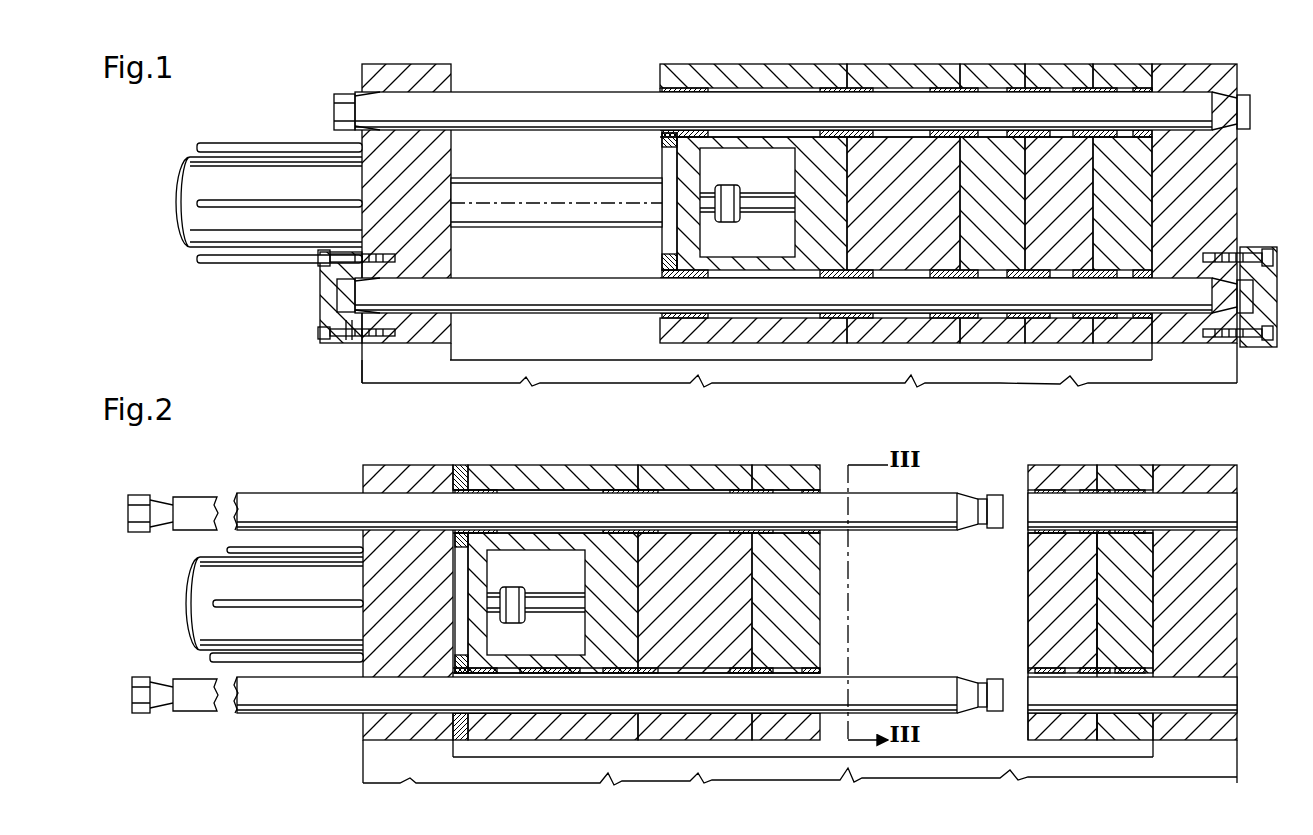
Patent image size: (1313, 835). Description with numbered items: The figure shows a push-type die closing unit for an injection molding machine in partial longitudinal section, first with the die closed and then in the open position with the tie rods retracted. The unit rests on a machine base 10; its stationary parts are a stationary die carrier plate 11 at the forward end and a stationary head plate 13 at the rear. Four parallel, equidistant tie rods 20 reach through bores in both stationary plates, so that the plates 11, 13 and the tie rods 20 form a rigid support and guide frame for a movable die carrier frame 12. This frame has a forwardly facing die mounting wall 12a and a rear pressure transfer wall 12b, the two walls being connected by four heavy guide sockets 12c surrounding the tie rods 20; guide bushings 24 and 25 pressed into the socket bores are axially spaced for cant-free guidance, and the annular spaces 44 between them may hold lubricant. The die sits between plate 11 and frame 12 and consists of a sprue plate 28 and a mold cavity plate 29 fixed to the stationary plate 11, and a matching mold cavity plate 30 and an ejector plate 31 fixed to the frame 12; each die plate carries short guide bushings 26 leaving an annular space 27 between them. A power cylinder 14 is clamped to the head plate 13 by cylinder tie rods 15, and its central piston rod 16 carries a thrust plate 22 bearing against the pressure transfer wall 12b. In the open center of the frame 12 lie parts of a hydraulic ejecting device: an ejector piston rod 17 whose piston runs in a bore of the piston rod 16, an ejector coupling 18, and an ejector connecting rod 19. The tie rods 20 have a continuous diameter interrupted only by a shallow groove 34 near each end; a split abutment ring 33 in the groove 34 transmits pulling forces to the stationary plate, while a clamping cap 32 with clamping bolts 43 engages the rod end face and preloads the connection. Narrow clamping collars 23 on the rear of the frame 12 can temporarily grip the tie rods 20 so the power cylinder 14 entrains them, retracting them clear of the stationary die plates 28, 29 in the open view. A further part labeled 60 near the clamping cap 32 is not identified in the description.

In FIG. 1, the machine base 10 is at (1213, 370).
In FIG. 2, the machine base 10 is at (1212, 768).
In FIG. 1, the stationary die carrier plate 11 is at (1225, 150).
In FIG. 2, the stationary die carrier plate 11 is at (1222, 565).
In FIG. 1, the movable die carrier frame 12 is at (694, 63).
In FIG. 2, the die mounting wall 12a is at (612, 562).
In FIG. 1, the pressure transfer wall 12b is at (668, 166).
In FIG. 2, the pressure transfer wall 12b is at (482, 578).
In FIG. 2, the guide sockets 12c is at (536, 733).
In FIG. 1, the stationary head plate 13 is at (396, 330).
In FIG. 2, the stationary head plate 13 is at (402, 726).
In FIG. 1, the power cylinder 14 is at (262, 228).
In FIG. 2, the power cylinder 14 is at (266, 580).
In FIG. 1, the cylinder tie rods 15 is at (282, 258).
In FIG. 2, the cylinder tie rods 15 is at (215, 656).
In FIG. 1, the piston rod 16 is at (527, 208).
In FIG. 1, the ejector piston rod 17 is at (708, 200).
In FIG. 2, the ejector piston rod 17 is at (497, 601).
In FIG. 1, the ejector coupling 18 is at (732, 220).
In FIG. 2, the ejector coupling 18 is at (520, 618).
In FIG. 1, the ejector connecting rod 19 is at (764, 203).
In FIG. 2, the ejector connecting rod 19 is at (545, 602).
In FIG. 1, the tie rods 20 is at (514, 100).
In FIG. 2, the tie rods 20 is at (266, 500).
In FIG. 1, the thrust plate 22 is at (665, 244).
In FIG. 2, the thrust plate 22 is at (460, 660).
In FIG. 1, the clamping collars 23 is at (662, 334).
In FIG. 2, the clamping collars 23 is at (462, 744).
In FIG. 1, the guide bushing 24 is at (705, 84).
In FIG. 2, the guide bushing 24 is at (486, 485).
In FIG. 1, the guide bushing 25 is at (828, 86).
In FIG. 2, the guide bushing 25 is at (616, 486).
In FIG. 1, the guide bushings 26 is at (1002, 92).
In FIG. 2, the guide bushings 26 is at (790, 490).
In FIG. 1, the annular space 27 is at (1120, 322).
In FIG. 2, the annular space 27 is at (762, 718).
In FIG. 1, the sprue plate 28 is at (1141, 330).
In FIG. 2, the sprue plate 28 is at (1140, 586).
In FIG. 1, the mold cavity plate 29 is at (1070, 195).
In FIG. 2, the mold cavity plate 29 is at (1078, 632).
In FIG. 1, the mold cavity plate 30 is at (1012, 245).
In FIG. 2, the mold cavity plate 30 is at (795, 728).
In FIG. 1, the ejector plate 31 is at (897, 256).
In FIG. 2, the ejector plate 31 is at (690, 650).
In FIG. 1, the clamping cap 32 is at (332, 342).
In FIG. 1, the split abutment ring 33 is at (350, 340).
In FIG. 1, the shallow groove 34 is at (352, 92).
In FIG. 2, the shallow groove 34 is at (147, 494).
In FIG. 1, the clamping bolts 43 is at (320, 332).
In FIG. 1, the annular spaces 44 is at (725, 318).
In FIG. 2, the annular spaces 44 is at (530, 716).
In FIG. 1, the screw 60 is at (390, 262).